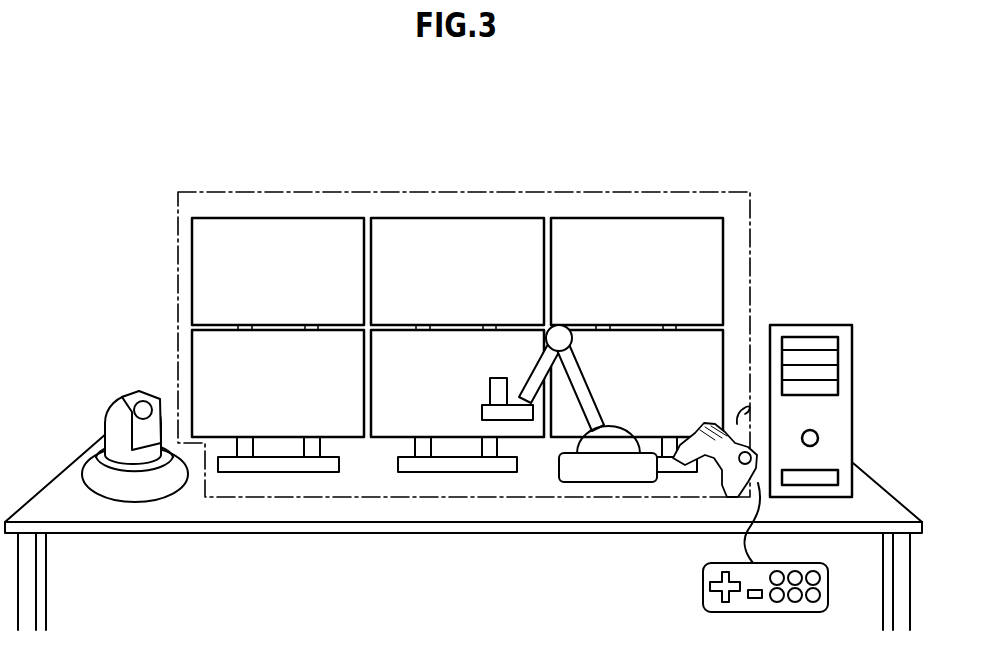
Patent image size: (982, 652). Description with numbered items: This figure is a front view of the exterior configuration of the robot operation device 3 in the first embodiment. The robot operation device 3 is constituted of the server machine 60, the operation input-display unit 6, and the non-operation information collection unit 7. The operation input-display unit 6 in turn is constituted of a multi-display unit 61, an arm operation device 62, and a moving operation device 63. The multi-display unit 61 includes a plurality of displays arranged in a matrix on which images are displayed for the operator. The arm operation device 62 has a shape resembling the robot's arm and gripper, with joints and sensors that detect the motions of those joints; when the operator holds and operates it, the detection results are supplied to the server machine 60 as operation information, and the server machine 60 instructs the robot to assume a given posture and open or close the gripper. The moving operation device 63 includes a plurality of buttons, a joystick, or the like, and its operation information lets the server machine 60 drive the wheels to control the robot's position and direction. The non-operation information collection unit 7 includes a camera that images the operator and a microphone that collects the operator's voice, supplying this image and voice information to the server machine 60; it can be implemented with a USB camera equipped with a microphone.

The robot operation device 3 is at (466, 182).
The operation input-display unit 6 is at (178, 240).
The non-operation information collection unit 7 is at (107, 412).
The server machine 60 is at (808, 325).
The multi-display unit 61 is at (724, 238).
The arm operation device 62 is at (610, 472).
The moving operation device 63 is at (718, 465).